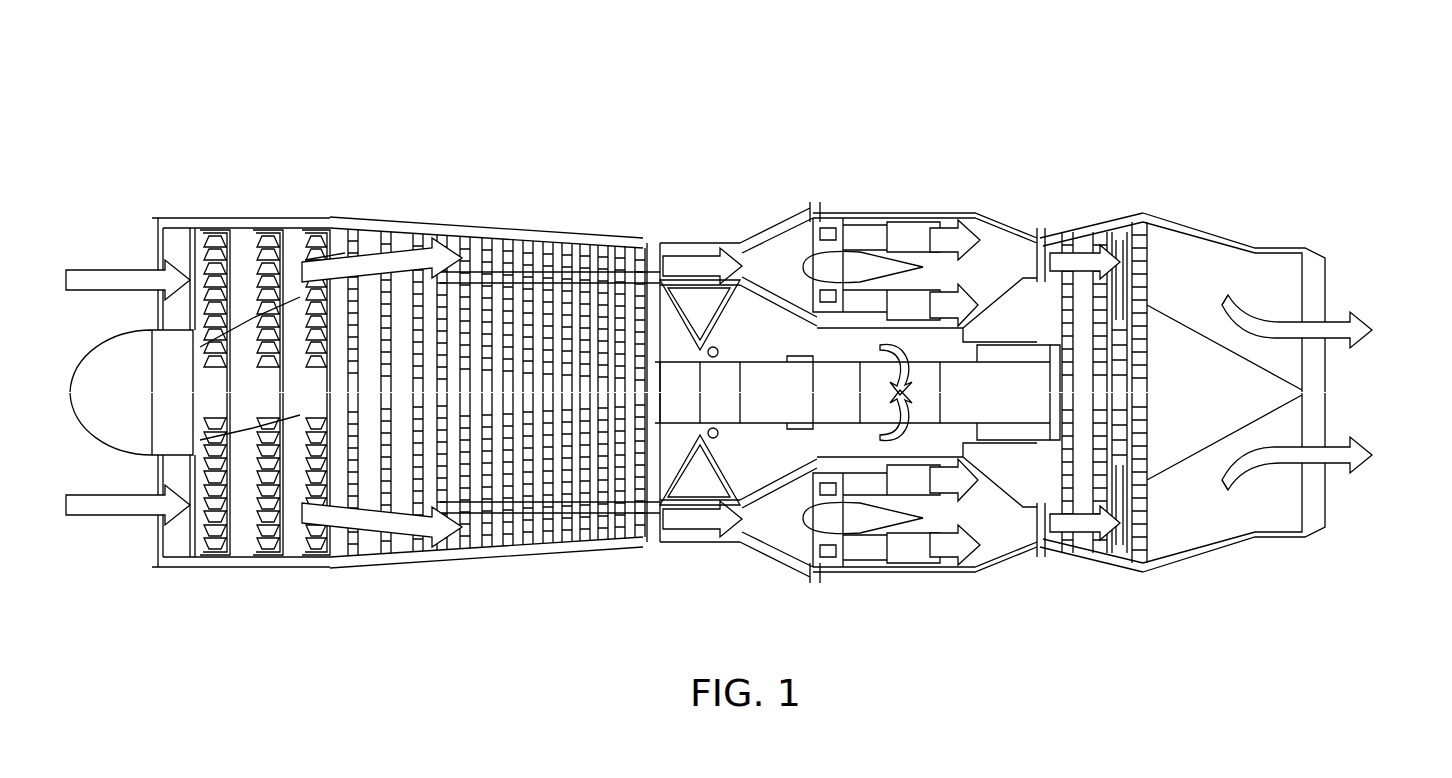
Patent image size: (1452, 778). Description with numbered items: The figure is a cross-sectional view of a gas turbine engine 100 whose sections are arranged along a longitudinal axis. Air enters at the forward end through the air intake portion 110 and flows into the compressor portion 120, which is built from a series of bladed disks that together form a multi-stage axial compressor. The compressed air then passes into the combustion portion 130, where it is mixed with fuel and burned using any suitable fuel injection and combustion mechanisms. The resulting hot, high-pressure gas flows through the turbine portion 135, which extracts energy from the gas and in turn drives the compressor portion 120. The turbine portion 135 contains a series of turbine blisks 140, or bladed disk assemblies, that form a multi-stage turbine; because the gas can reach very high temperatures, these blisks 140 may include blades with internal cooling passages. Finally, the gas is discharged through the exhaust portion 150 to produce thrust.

The turbine engine 100 is at (758, 340).
The air intake portion 110 is at (160, 530).
The compressor portion 120 is at (505, 325).
The combustion portion 130 is at (752, 534).
The turbine portion 135 is at (1083, 430).
The turbine blisks 140 is at (1150, 500).
The exhaust portion 150 is at (1350, 403).